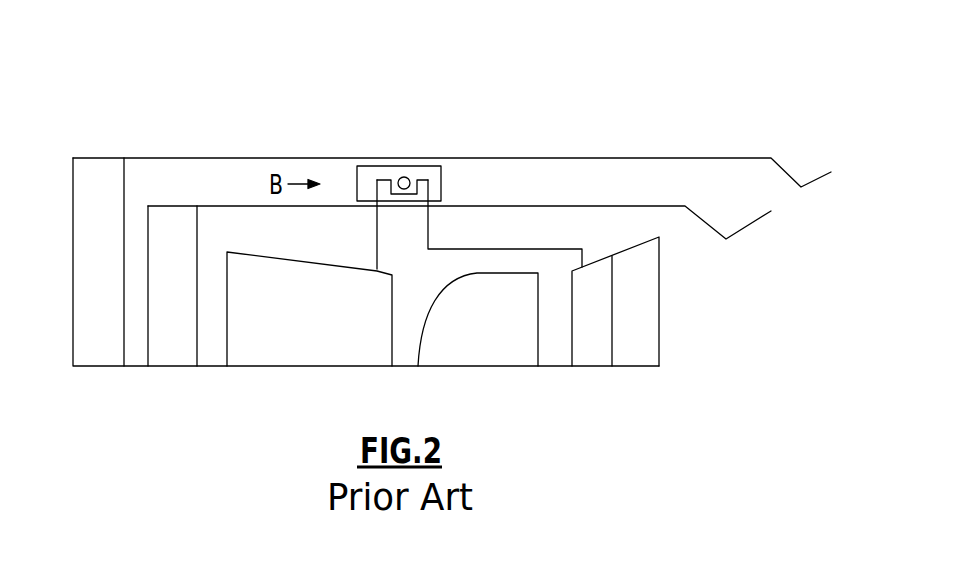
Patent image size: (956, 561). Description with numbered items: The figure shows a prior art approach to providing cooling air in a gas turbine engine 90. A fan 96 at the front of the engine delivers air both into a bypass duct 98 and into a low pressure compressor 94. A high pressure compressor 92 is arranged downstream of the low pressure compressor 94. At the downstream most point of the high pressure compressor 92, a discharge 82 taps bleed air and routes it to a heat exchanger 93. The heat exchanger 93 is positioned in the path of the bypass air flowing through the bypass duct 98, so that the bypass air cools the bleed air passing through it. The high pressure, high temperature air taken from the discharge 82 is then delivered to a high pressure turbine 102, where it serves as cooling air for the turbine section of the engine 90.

The engine 90 is at (368, 101).
The fan 96 is at (104, 180).
The bypass duct 98 is at (245, 180).
The low pressure compressor 94 is at (173, 350).
The high pressure compressor 92 is at (350, 346).
The discharge 82 is at (377, 268).
The heat exchanger 93 is at (360, 166).
The high pressure turbine 102 is at (592, 278).